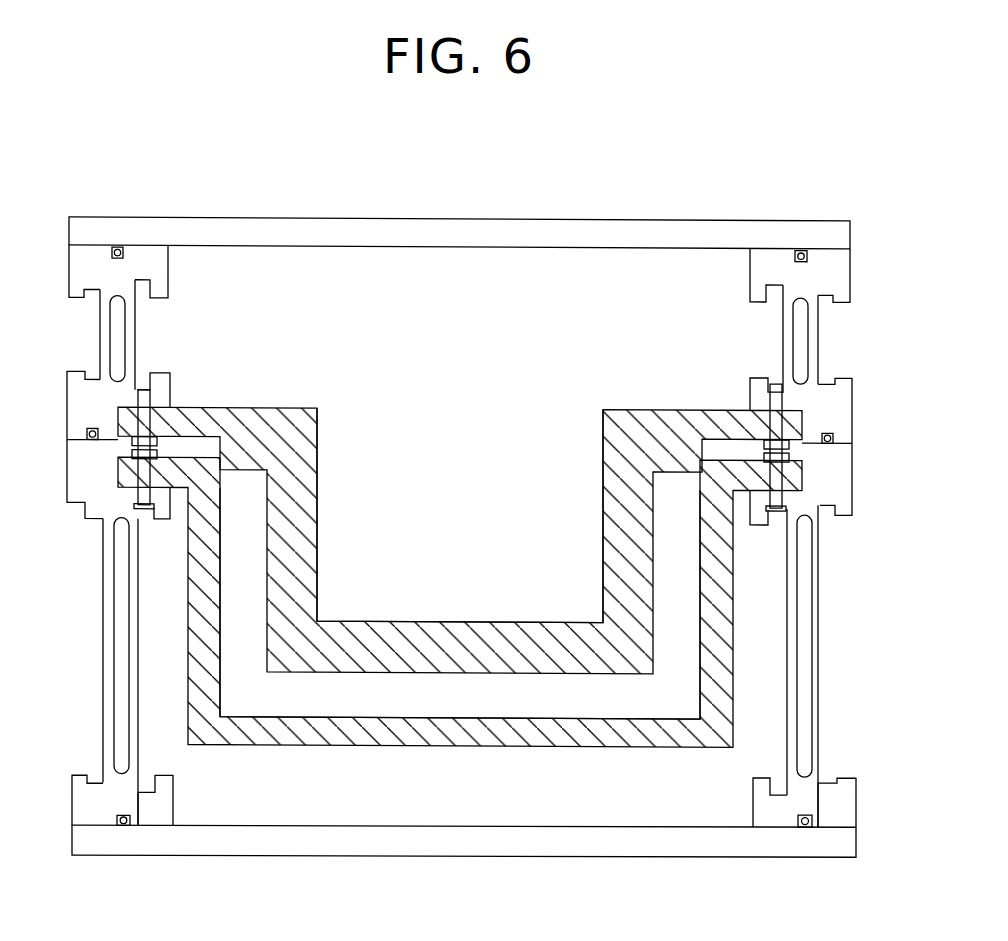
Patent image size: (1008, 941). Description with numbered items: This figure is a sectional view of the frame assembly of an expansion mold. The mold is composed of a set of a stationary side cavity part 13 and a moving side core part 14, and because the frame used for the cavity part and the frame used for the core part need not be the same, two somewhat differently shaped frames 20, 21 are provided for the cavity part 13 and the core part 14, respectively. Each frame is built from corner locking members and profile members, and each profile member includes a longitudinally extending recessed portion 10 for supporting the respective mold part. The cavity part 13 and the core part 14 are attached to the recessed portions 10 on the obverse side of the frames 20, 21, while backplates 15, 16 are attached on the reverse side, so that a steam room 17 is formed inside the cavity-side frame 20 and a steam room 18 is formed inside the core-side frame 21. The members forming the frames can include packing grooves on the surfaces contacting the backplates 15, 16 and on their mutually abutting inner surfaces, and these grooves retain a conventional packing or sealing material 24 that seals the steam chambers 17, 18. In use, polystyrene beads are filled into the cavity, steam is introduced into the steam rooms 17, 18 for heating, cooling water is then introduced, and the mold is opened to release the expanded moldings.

The recessed portion 10 is at (117, 410).
The stationary side cavity part 13 is at (338, 746).
The moving side core part 14 is at (320, 476).
The backplate 15 is at (398, 858).
The backplate 16 is at (440, 220).
The steam room 17 is at (497, 790).
The steam room 18 is at (528, 398).
The frame for cavity part 20 is at (84, 651).
The frame for core part 21 is at (66, 304).
The packing or sealing material 24 is at (118, 247).